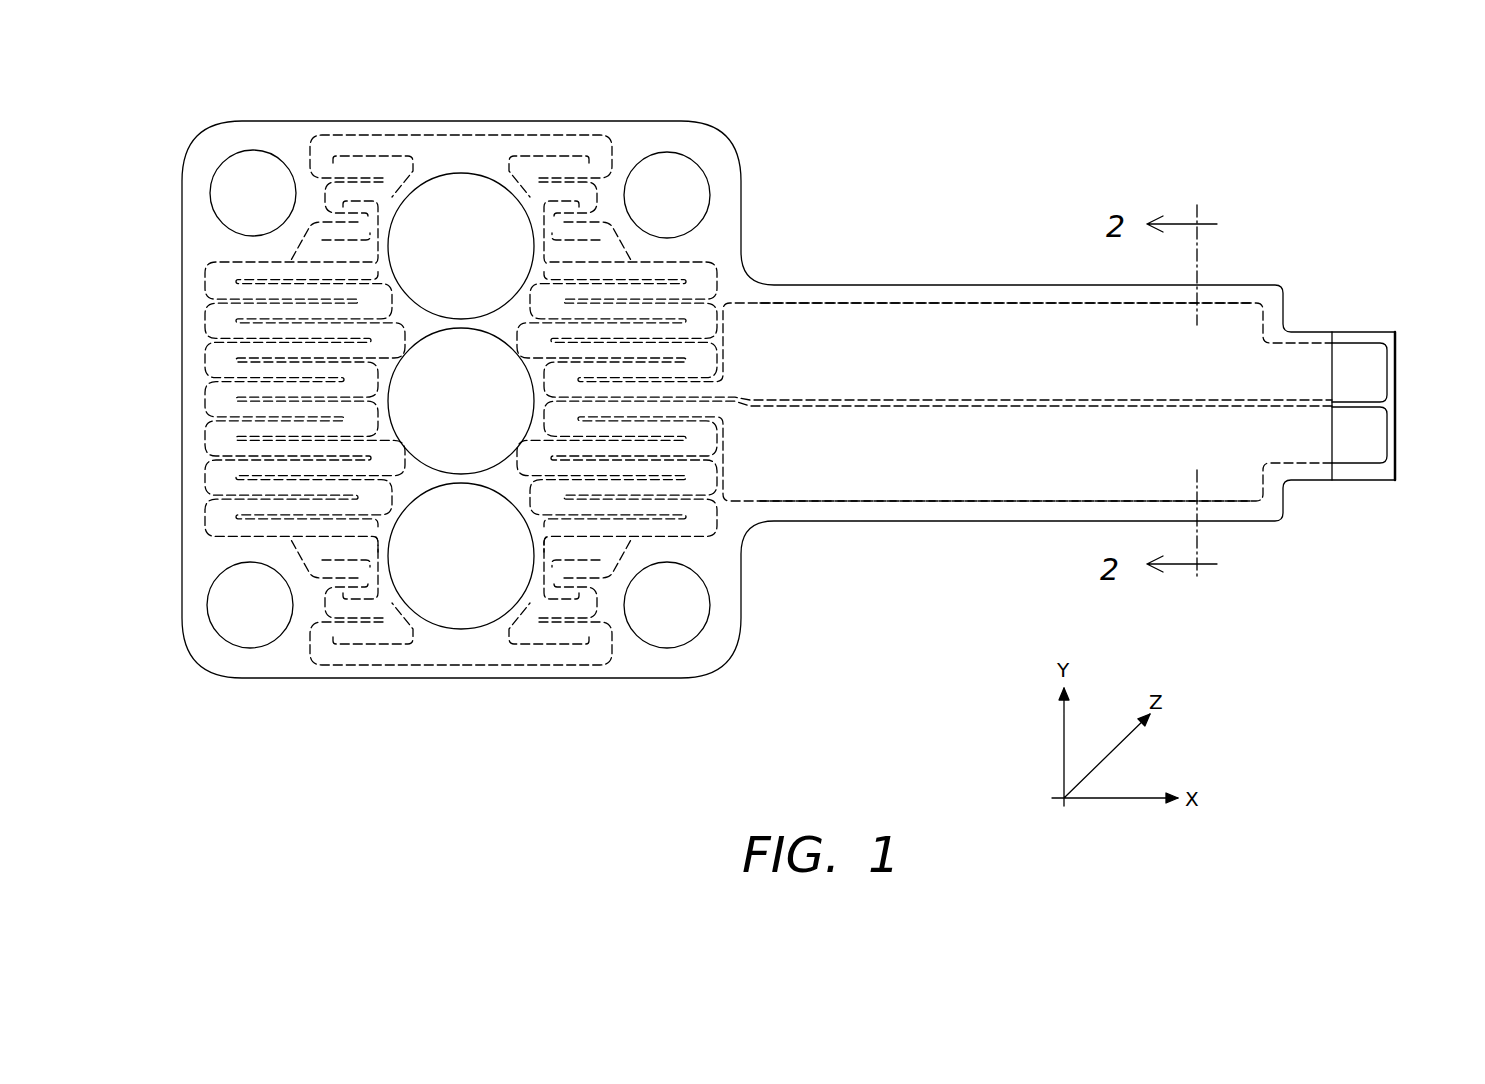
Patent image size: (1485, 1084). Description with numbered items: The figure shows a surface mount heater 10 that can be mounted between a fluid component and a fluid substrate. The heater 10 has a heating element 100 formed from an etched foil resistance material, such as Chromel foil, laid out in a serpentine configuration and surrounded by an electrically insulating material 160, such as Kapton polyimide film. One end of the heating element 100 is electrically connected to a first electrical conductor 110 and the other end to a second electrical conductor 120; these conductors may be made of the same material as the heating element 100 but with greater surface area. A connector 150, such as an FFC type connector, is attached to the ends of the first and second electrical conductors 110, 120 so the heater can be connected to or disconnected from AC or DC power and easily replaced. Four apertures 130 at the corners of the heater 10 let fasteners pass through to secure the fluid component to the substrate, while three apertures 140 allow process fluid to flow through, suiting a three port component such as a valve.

The heater 10 is at (1097, 153).
The heating element 100 is at (345, 665).
The first electrical conductor 110 is at (930, 288).
The second electrical conductor 120 is at (935, 503).
The apertures 130 is at (252, 648).
The apertures 140 is at (481, 571).
The connector 150 is at (1370, 328).
The electrically insulating material 160 is at (638, 660).